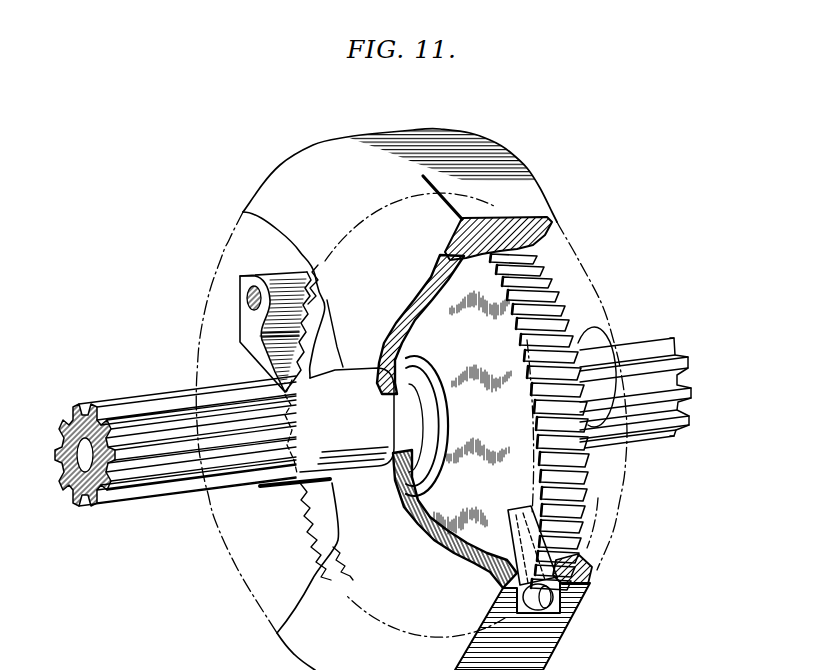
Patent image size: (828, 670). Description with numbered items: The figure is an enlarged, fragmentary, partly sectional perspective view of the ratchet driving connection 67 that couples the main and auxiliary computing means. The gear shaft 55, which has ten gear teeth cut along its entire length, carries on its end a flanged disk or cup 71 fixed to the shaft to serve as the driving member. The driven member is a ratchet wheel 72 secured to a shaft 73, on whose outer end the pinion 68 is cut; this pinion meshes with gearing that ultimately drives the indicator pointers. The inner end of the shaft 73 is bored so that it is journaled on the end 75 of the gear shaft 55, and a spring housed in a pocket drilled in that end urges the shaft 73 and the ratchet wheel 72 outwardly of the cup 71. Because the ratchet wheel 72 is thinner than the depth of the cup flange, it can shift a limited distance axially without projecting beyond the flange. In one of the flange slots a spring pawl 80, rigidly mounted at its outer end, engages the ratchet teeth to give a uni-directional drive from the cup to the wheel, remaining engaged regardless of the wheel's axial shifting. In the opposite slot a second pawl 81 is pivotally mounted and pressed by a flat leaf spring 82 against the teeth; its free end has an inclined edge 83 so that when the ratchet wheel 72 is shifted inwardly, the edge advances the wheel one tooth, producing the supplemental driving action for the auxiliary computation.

The gear shaft 55 is at (170, 494).
The ratchet driving connection 67 is at (588, 158).
The pinion 68 is at (670, 433).
The flanged disk or cup 71 is at (556, 635).
The ratchet wheel 72 is at (567, 294).
The shaft 73 is at (590, 416).
The end of the shaft 75 is at (413, 403).
The spring pawl 80 is at (520, 508).
The second pawl 81 is at (238, 310).
The flat leaf spring 82 is at (262, 340).
The inclined edge 83 is at (297, 407).